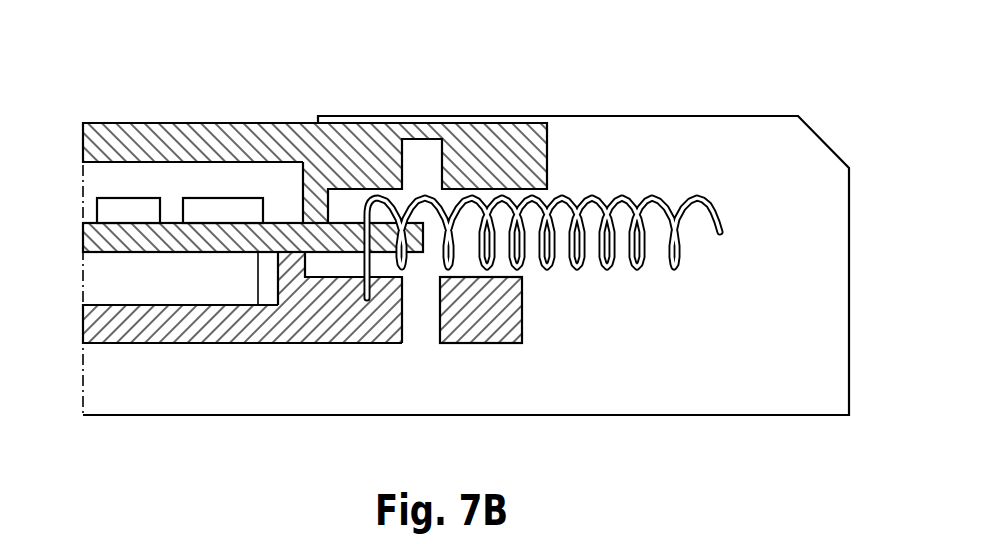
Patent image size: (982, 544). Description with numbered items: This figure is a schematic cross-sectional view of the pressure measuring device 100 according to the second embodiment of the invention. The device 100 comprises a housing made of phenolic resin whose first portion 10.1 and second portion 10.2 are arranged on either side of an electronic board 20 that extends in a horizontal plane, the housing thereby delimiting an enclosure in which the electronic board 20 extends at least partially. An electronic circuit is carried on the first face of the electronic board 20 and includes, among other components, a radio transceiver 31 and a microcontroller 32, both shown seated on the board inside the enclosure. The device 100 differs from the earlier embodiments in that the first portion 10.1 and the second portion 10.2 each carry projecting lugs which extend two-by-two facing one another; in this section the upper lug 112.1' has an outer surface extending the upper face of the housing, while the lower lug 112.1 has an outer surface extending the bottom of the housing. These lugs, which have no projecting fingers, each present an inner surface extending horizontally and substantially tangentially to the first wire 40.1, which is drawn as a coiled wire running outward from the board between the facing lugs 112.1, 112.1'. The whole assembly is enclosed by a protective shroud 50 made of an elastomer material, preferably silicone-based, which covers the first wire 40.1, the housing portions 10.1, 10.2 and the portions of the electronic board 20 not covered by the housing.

The pressure measuring device 100 is at (831, 110).
The protective shroud 50 is at (827, 335).
The first portion 10.1 is at (198, 130).
The second portion 10.2 is at (198, 326).
The projecting lug 112.1 is at (400, 326).
The projecting lug 112.1' is at (425, 129).
The electronic board 20 is at (83, 240).
The radio transceiver 31 is at (225, 212).
The microcontroller 32 is at (127, 212).
The first wire 40.1 is at (712, 212).